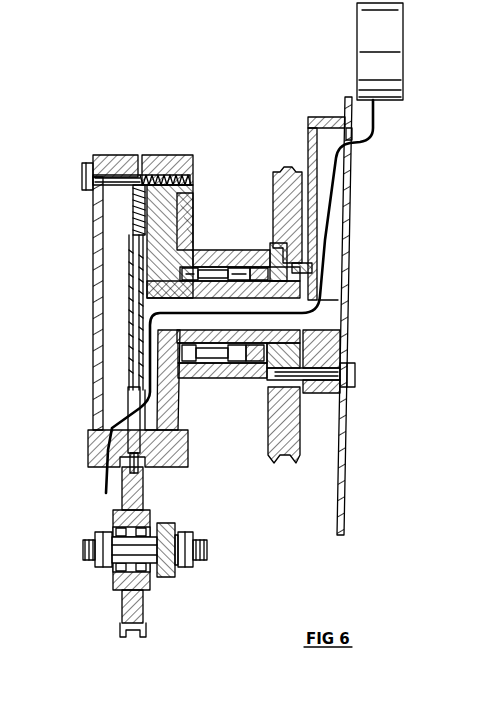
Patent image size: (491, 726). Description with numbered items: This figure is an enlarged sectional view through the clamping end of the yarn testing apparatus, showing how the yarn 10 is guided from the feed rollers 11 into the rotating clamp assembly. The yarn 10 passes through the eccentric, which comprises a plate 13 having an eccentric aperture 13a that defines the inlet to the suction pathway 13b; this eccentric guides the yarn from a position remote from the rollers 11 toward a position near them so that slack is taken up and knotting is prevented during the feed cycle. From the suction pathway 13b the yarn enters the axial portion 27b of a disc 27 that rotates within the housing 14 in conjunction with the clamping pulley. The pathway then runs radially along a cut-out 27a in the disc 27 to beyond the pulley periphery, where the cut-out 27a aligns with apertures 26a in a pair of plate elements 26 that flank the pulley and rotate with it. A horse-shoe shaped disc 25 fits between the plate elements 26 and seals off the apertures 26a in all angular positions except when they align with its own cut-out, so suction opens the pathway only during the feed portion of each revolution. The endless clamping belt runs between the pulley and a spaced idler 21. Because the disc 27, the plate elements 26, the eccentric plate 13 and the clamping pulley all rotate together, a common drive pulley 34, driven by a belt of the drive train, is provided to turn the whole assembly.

The yarn 10 is at (365, 143).
The rollers 11 is at (405, 58).
The plate 13 is at (343, 324).
The eccentric aperture 13a is at (352, 132).
The suction pathway 13b is at (327, 318).
The housing 14 is at (128, 143).
The idler 21 is at (145, 603).
The horse-shoe shaped disc 25 is at (150, 158).
The plate elements 26 is at (140, 329).
The apertures 26a is at (130, 403).
The disc 27 is at (163, 223).
The cut-out 27a is at (153, 413).
The axial portion 27b is at (210, 300).
The drive pulley 34 is at (270, 422).